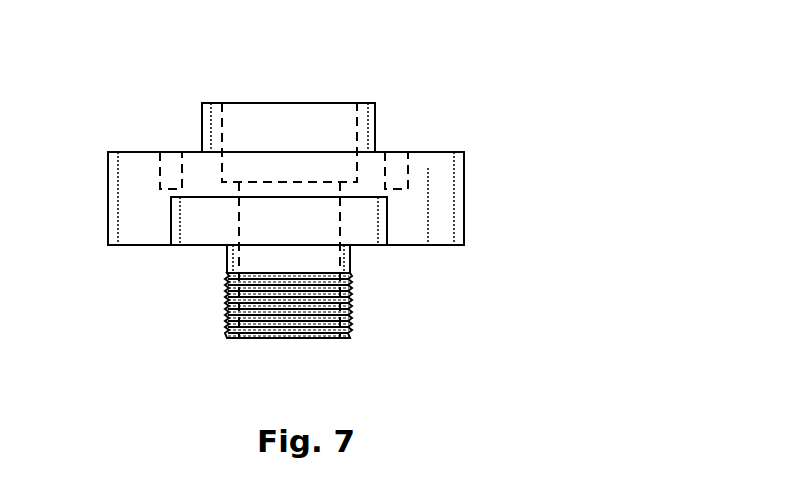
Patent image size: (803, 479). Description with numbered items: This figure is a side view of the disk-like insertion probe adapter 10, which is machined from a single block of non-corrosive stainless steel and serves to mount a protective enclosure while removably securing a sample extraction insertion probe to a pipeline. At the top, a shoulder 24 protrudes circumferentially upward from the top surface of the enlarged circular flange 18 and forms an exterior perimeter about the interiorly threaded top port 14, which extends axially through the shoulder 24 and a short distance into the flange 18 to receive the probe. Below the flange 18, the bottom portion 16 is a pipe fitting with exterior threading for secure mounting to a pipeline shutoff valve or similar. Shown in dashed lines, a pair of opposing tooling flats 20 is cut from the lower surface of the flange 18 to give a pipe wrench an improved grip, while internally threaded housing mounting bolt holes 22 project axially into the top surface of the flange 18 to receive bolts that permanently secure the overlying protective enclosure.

The insertion probe adapter 10 is at (421, 77).
The interiorly threaded top port 14 is at (355, 135).
The bottom portion 16 is at (351, 265).
The circular flange 18 is at (437, 186).
The tooling flats 20 is at (208, 221).
The housing mounting bolt holes 22 is at (180, 172).
The shoulder 24 is at (208, 117).